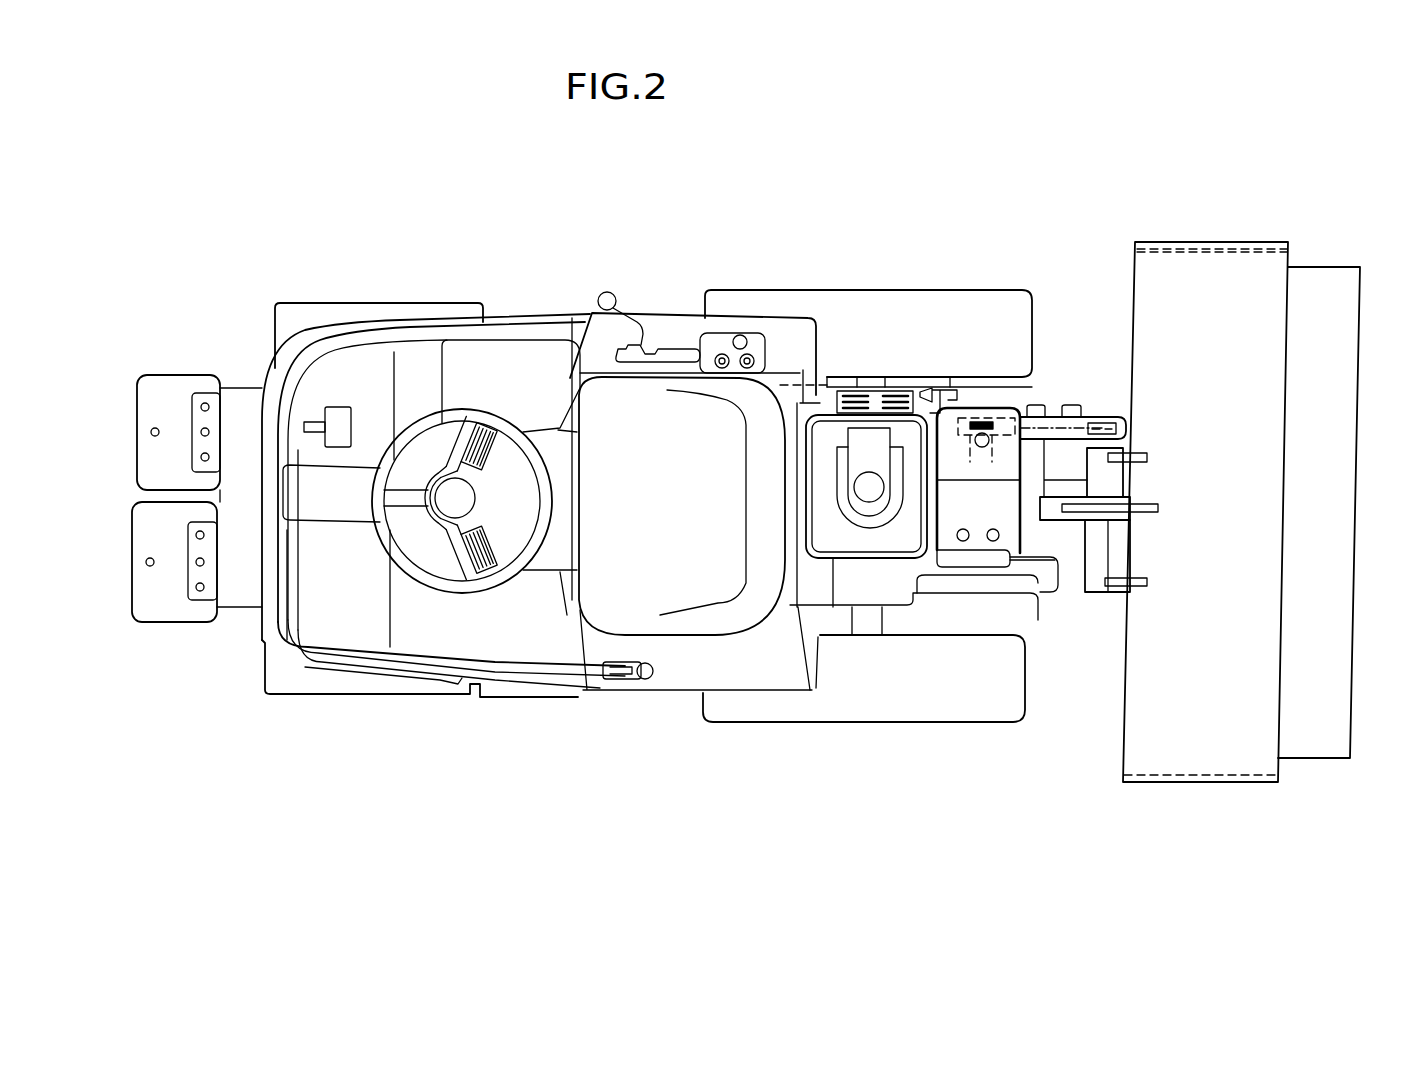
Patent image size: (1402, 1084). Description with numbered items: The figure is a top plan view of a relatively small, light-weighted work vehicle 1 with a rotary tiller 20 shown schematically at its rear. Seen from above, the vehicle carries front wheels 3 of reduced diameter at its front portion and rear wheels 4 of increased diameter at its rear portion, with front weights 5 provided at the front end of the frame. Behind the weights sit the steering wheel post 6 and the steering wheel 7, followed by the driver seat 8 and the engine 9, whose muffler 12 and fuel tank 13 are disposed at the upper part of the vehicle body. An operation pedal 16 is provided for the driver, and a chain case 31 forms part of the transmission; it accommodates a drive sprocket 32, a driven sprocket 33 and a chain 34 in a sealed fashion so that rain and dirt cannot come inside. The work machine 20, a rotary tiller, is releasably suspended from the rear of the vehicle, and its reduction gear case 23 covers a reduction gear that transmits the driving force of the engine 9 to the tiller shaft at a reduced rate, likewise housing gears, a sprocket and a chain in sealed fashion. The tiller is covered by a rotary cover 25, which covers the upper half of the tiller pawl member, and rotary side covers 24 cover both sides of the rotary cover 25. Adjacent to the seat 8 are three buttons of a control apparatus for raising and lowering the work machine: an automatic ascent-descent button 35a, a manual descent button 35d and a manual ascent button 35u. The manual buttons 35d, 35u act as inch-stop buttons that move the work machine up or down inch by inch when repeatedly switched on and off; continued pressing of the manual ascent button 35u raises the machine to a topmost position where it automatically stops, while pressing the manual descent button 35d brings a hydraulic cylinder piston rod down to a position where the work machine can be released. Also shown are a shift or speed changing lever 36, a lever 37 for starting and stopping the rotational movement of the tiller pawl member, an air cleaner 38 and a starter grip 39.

The work vehicle 1 is at (268, 232).
The front wheels 3 is at (445, 305).
The rear wheels 4 is at (1000, 292).
The front weights 5 is at (180, 378).
The steering wheel post 6 is at (368, 527).
The steering wheel 7 is at (461, 594).
The driver seat 8 is at (647, 562).
The engine 9 is at (895, 373).
The muffler 12 is at (986, 568).
The fuel tank 13 is at (871, 568).
The operation pedal 16 is at (343, 405).
The work machine 20 is at (1012, 833).
The reduction gear case 23 is at (1102, 530).
The rotary side cover 24 is at (1262, 240).
The rotary cover 25 is at (1190, 362).
The chain case 31 is at (1093, 417).
The drive sprocket 32 is at (1000, 422).
The driven sprocket 33 is at (1112, 425).
The chain 34 is at (1050, 417).
The automatic ascent-descent button 35a is at (741, 334).
The manual descent button 35d is at (716, 352).
The manual ascent button 35u is at (752, 356).
The shift lever 36 is at (607, 291).
The lever 37 is at (642, 680).
The air cleaner 38 is at (980, 432).
The starter grip 39 is at (932, 391).